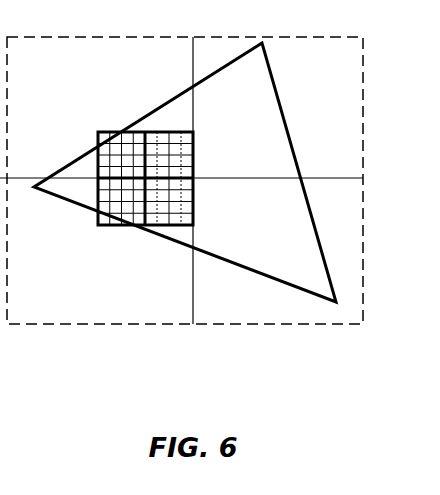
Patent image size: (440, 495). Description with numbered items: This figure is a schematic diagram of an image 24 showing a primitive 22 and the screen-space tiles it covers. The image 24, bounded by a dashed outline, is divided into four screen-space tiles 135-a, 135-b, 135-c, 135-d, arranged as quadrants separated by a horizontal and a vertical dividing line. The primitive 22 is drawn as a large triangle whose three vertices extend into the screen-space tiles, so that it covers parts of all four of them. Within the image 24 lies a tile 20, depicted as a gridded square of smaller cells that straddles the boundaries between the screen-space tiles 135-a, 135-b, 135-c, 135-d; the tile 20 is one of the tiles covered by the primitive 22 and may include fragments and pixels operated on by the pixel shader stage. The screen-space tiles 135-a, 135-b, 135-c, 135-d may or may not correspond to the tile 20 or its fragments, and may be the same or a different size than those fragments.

The image 24 is at (168, 36).
The screen-space tile 135-a is at (121, 107).
The screen-space tile 135-b is at (278, 110).
The screen-space tile 135-c is at (96, 247).
The screen-space tile 135-d is at (246, 251).
The tile 20 is at (200, 204).
The primitive 22 is at (167, 240).